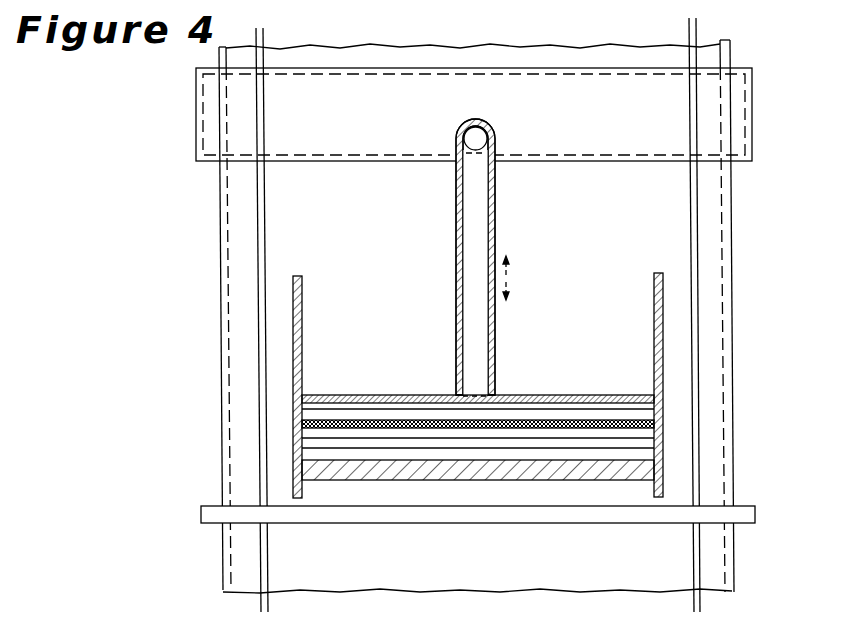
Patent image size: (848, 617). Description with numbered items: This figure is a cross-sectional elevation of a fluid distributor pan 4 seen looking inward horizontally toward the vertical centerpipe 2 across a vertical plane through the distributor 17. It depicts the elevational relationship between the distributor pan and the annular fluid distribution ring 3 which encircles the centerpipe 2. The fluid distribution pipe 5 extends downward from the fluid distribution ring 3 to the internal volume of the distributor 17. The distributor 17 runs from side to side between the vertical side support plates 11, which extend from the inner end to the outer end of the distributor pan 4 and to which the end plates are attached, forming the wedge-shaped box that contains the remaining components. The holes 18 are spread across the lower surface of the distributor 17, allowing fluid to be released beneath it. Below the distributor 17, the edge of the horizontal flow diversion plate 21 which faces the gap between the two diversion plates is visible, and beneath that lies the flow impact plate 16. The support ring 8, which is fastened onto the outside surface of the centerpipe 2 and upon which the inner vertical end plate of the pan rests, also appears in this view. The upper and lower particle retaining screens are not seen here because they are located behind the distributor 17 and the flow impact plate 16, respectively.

The vertical centerpipe 2 is at (220, 300).
The fluid distribution ring 3 is at (752, 117).
The fluid distributor pan 4 is at (302, 305).
The fluid distribution pipe 5 is at (492, 125).
The support ring 8 is at (437, 523).
The side support plates 11 is at (654, 305).
The flow impact plate 16 is at (413, 481).
The distributor 17 is at (548, 396).
The holes 18 is at (407, 422).
The horizontal flow diversion plate 21 is at (547, 448).